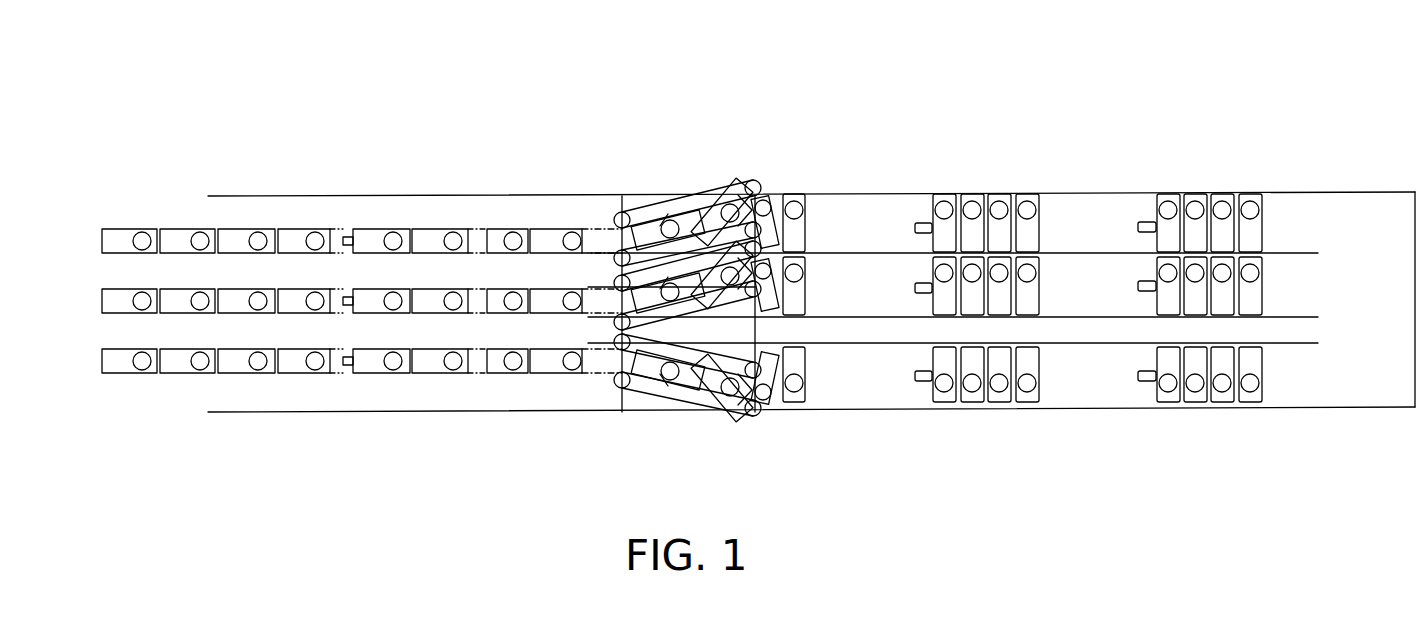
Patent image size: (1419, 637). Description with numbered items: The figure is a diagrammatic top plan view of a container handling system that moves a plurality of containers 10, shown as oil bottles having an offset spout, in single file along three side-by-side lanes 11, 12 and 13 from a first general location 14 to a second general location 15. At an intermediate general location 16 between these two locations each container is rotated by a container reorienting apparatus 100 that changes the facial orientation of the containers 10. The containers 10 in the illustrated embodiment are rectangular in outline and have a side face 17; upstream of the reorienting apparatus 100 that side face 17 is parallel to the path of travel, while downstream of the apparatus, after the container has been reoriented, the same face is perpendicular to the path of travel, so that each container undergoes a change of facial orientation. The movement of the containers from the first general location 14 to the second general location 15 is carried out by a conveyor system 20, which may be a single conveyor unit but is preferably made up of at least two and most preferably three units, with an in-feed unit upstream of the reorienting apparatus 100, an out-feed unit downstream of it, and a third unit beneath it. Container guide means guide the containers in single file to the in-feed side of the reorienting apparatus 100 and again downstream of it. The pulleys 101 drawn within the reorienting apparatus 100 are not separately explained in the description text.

The carrier segment 10 is at (371, 237).
The carrier segment 11 is at (427, 237).
The carrier segment 12 is at (428, 303).
The coupling segment 13 is at (495, 372).
The infeed conveyor system 14 is at (308, 177).
The outfeed conveyor section 15 is at (990, 167).
The transfer station 16 is at (726, 116).
The coupling segment 17 is at (495, 228).
The lower conveyor lane 20 is at (343, 394).
The transfer mechanism 100 is at (657, 195).
The pulley 101 is at (756, 184).